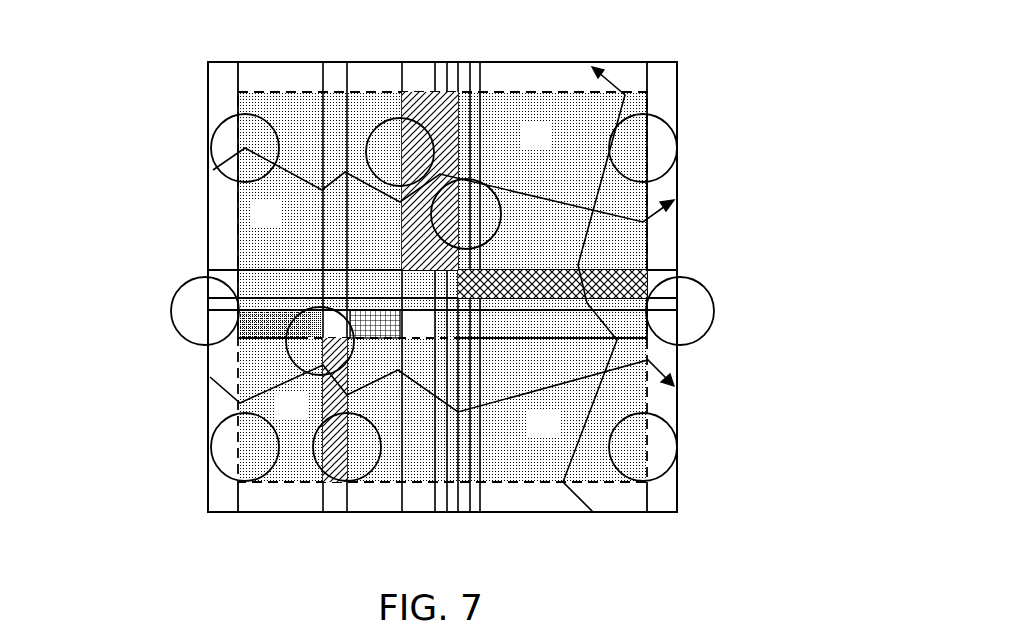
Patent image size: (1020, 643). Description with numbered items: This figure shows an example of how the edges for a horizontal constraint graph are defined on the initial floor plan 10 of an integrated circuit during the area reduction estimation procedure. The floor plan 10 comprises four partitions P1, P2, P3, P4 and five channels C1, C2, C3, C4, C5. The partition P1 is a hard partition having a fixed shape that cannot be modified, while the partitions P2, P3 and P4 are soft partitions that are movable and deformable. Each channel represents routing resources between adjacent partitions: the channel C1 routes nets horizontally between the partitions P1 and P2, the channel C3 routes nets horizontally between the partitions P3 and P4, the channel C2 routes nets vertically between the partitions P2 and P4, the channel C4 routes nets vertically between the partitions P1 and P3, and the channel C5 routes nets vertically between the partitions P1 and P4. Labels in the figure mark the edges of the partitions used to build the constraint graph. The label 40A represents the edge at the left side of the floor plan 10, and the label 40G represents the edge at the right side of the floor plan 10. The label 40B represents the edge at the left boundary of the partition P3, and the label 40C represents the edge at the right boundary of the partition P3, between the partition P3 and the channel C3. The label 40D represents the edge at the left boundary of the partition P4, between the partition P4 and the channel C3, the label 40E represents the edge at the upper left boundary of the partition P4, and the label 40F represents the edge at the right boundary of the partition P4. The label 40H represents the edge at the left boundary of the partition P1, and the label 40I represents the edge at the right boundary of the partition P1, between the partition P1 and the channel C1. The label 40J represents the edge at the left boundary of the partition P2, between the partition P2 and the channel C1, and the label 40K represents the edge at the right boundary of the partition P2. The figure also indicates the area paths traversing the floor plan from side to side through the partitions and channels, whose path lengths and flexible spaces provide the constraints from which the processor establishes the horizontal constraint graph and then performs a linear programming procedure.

The floor plan 10 is at (770, 66).
The edge at the left side of the floor plan 40A is at (177, 280).
The edge at the left boundary of partition P3 40B is at (220, 468).
The edge at the right boundary of partition P3 40C is at (290, 370).
The edge at the left boundary of partition P4 40D is at (314, 468).
The edge at the upper left boundary of partition P4 40E is at (648, 298).
The edge at the right boundary of partition P4 40F is at (668, 468).
The edge at the right side of the floor plan 40G is at (716, 312).
The edge at the left boundary of partition P1 40H is at (222, 122).
The edge at the right boundary of partition P1 40I is at (378, 122).
The edge at the left boundary of partition P2 40J is at (503, 202).
The edge at the right boundary of partition P2 40K is at (666, 122).
The channel C1 is at (408, 106).
The channel C2 is at (645, 268).
The channel C3 is at (348, 400).
The channel C4 is at (240, 322).
The channel C5 is at (375, 300).
The partition P1 is at (282, 227).
The partition P2 is at (552, 149).
The partition P3 is at (308, 419).
The partition P4 is at (560, 437).